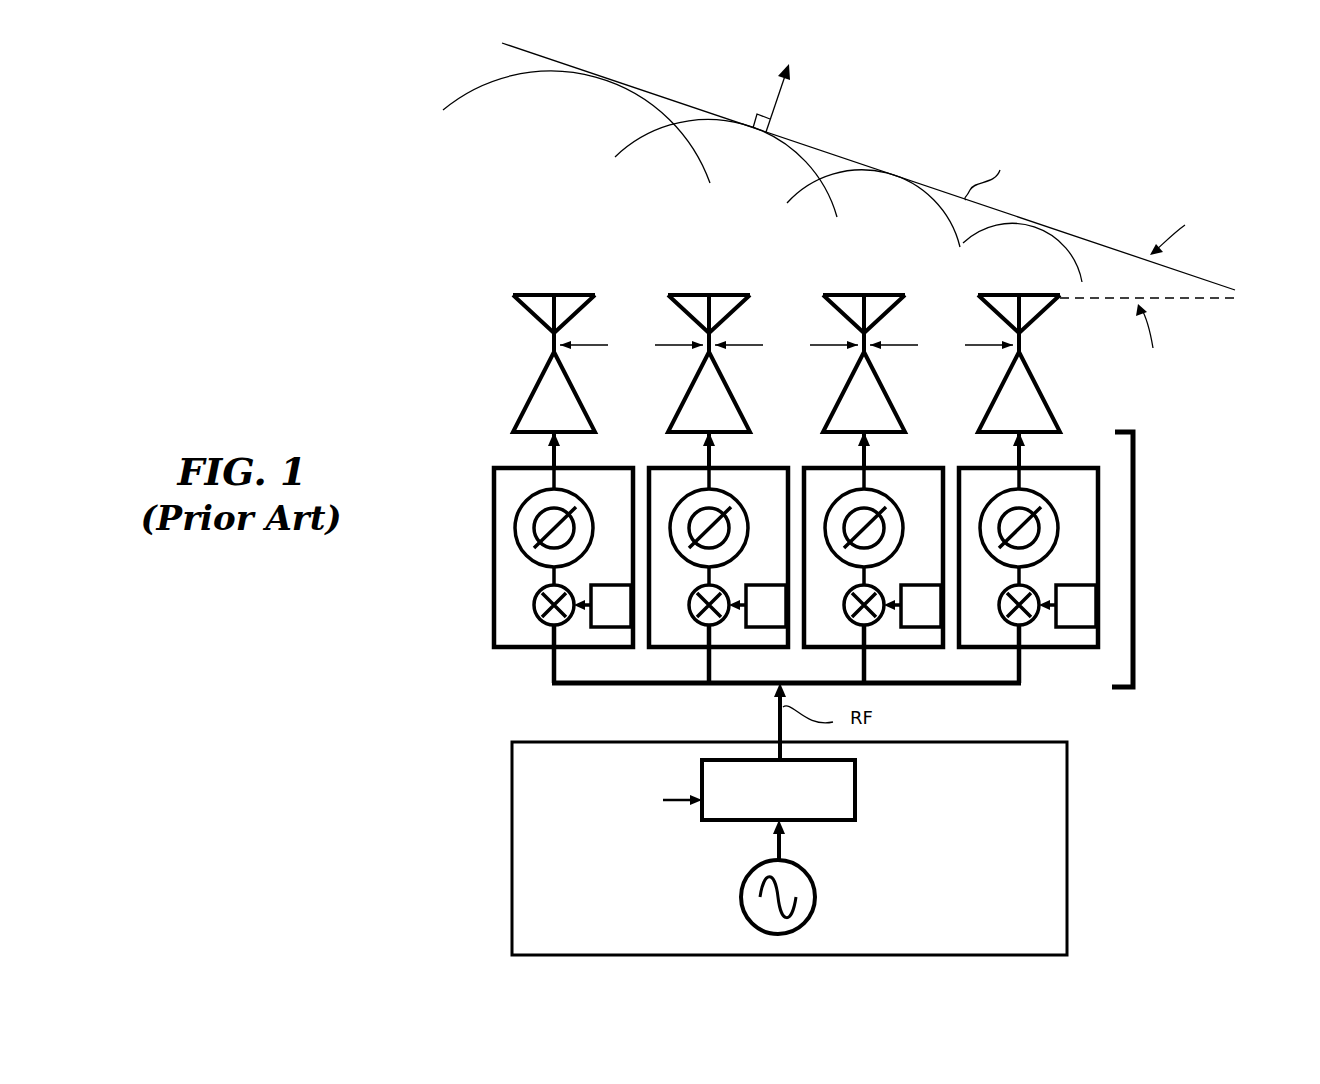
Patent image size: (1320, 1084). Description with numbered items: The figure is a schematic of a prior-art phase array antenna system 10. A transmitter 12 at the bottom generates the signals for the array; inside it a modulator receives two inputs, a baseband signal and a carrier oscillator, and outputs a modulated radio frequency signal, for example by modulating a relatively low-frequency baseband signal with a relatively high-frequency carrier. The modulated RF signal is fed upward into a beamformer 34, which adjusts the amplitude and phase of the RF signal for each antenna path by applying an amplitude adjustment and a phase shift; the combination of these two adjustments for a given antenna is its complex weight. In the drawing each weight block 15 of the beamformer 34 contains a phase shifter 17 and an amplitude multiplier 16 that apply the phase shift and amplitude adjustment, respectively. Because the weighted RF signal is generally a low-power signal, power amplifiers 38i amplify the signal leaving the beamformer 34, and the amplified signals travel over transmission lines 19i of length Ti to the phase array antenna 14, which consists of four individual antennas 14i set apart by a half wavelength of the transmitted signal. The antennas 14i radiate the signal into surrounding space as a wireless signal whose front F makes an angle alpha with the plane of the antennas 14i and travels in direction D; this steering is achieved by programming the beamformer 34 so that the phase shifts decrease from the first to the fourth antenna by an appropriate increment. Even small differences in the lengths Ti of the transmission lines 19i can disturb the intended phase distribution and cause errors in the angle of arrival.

The phase array antenna system 10 is at (1190, 150).
The transmitter 12 is at (1067, 851).
The phase array antenna 14 is at (470, 302).
The individual antenna 14i is at (840, 293).
The complex weight block 15 is at (493, 582).
The amplitude multiplier 16 is at (537, 618).
The phase shifter 17 is at (493, 532).
The transmission line 19i is at (709, 450).
The beamformer 34 is at (1135, 482).
The power amplifier 38i is at (841, 397).